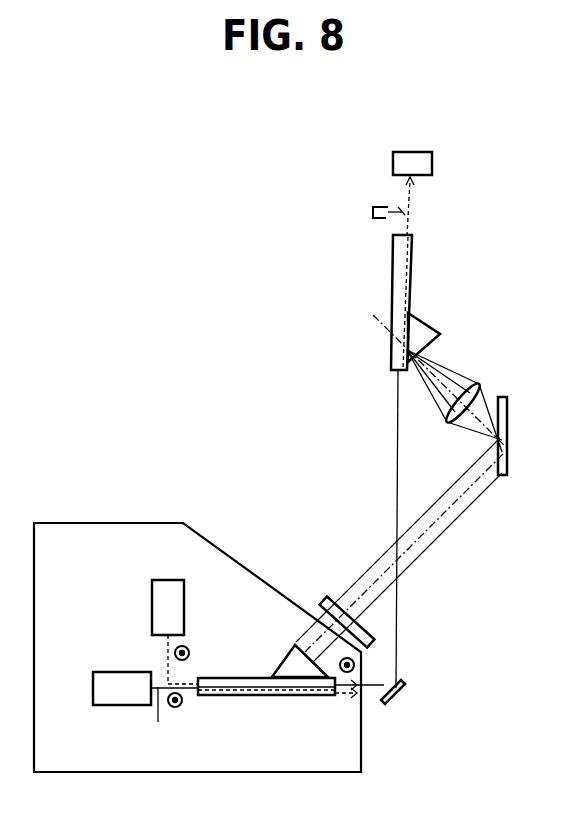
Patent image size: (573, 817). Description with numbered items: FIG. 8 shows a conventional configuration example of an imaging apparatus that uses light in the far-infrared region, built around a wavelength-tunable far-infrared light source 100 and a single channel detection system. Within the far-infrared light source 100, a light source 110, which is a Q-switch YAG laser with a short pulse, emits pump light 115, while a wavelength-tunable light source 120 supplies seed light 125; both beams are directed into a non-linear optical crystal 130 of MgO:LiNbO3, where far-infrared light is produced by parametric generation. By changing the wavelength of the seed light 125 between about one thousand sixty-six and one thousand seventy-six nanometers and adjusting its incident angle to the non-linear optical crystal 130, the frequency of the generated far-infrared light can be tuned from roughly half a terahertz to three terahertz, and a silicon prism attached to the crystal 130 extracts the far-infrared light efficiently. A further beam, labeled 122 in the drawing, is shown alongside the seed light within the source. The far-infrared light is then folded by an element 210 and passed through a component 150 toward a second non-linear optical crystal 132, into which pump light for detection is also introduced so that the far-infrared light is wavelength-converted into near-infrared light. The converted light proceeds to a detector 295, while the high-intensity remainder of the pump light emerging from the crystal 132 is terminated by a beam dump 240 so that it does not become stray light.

The wavelength-tunable far-infrared light source 100 is at (80, 522).
The light source 110 is at (102, 678).
The pump light 115 is at (176, 725).
The wavelength-tunable light source 120 is at (162, 592).
The return beam 122 is at (163, 685).
The seed light 125 is at (182, 685).
The non-linear optical crystal 130 is at (240, 697).
The non-linear optical crystal 132 is at (392, 368).
The beam splitter 150 is at (322, 603).
The mirror 210 is at (402, 683).
The beam dump 240 is at (372, 214).
The detector 295 is at (433, 163).